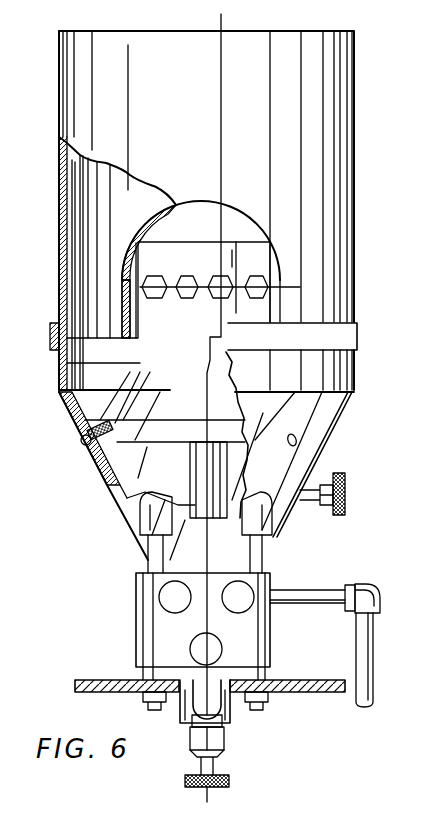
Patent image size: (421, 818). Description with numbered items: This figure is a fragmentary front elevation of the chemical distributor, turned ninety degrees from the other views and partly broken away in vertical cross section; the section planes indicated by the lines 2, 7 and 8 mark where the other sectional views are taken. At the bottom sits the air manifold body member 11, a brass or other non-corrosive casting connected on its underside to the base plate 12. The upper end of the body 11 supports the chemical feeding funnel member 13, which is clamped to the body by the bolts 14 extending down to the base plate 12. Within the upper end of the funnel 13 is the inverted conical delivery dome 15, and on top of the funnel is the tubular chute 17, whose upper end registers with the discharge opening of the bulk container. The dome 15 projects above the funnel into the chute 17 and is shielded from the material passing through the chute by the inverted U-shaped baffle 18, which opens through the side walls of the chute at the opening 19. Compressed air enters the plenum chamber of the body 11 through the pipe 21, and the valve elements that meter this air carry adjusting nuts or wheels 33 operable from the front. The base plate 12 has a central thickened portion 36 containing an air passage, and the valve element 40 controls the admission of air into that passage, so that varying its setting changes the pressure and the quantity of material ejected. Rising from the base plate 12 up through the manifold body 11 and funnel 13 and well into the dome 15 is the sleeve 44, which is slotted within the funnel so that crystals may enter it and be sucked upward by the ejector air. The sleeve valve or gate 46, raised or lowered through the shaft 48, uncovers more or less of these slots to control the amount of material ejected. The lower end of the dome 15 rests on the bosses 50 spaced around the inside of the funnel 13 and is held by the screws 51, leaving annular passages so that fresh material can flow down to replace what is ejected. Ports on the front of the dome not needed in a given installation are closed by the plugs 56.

The section line 2- 2 is at (230, 18).
The section line 7- 7 is at (197, 242).
The section line 8- 8 is at (67, 479).
The air manifold body member 11 is at (247, 630).
The base plate 12 is at (250, 675).
The chemical feeding funnel member 13 is at (345, 398).
The bolts 14 is at (148, 546).
The inverted conical delivery dome 15 is at (67, 365).
The tubular chute 17 is at (330, 125).
The inverted U-shaped baffle 18 is at (122, 270).
The opening 19 is at (242, 201).
The pipe 21 is at (326, 594).
The adjusting nuts or wheels 33 is at (198, 640).
The central thickened portion 36 is at (213, 703).
The valve element 40 is at (214, 738).
The second tube or sleeve 44 is at (200, 440).
The sleeve valve or gate 46 is at (195, 505).
The shaft 48 is at (166, 497).
The bosses 50 is at (88, 425).
The screws 51 is at (82, 438).
The plugs 56 is at (170, 291).